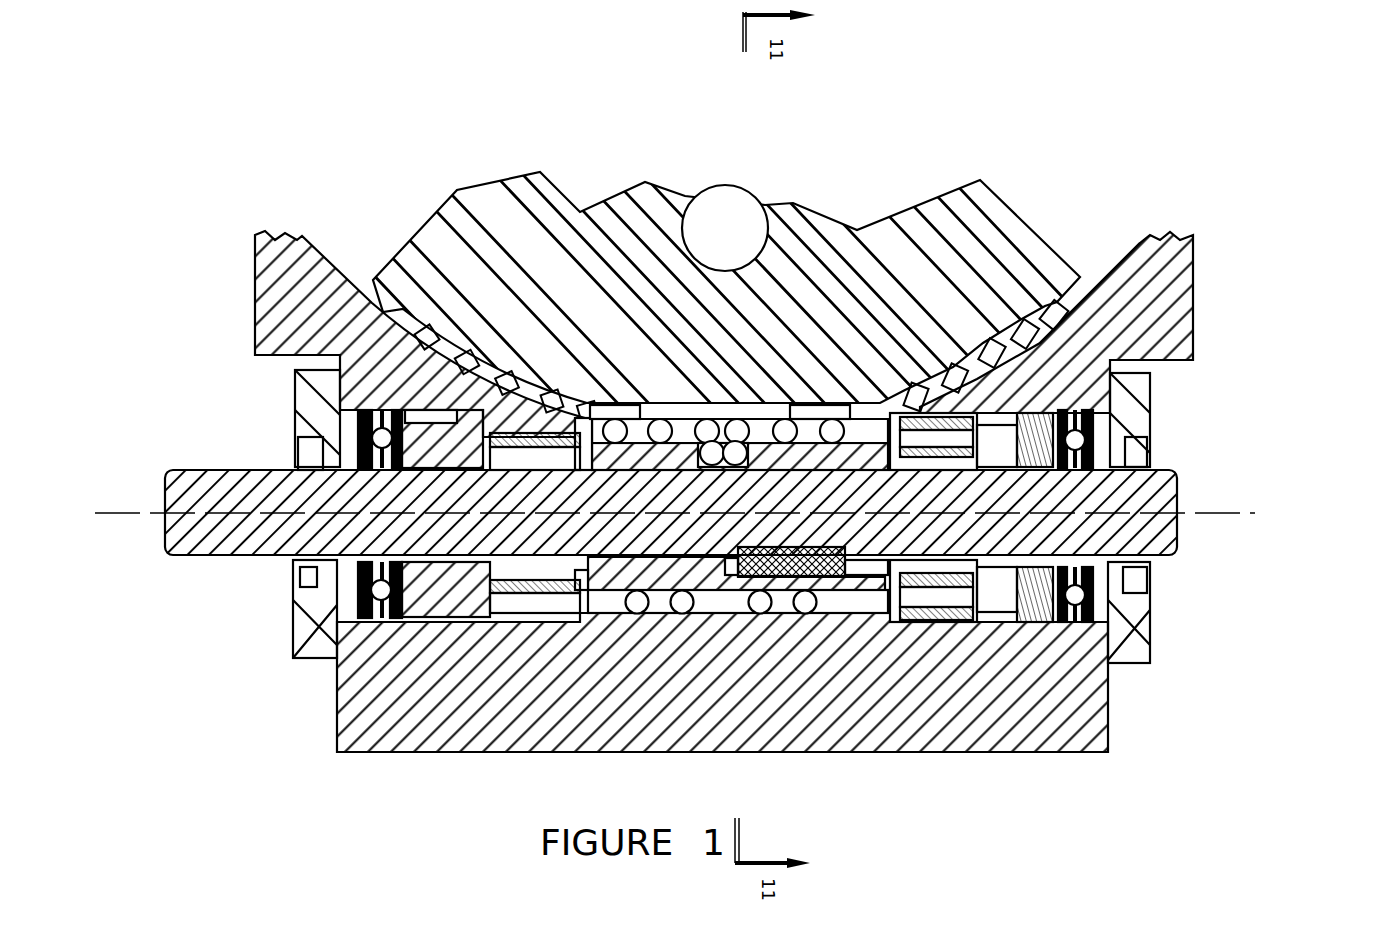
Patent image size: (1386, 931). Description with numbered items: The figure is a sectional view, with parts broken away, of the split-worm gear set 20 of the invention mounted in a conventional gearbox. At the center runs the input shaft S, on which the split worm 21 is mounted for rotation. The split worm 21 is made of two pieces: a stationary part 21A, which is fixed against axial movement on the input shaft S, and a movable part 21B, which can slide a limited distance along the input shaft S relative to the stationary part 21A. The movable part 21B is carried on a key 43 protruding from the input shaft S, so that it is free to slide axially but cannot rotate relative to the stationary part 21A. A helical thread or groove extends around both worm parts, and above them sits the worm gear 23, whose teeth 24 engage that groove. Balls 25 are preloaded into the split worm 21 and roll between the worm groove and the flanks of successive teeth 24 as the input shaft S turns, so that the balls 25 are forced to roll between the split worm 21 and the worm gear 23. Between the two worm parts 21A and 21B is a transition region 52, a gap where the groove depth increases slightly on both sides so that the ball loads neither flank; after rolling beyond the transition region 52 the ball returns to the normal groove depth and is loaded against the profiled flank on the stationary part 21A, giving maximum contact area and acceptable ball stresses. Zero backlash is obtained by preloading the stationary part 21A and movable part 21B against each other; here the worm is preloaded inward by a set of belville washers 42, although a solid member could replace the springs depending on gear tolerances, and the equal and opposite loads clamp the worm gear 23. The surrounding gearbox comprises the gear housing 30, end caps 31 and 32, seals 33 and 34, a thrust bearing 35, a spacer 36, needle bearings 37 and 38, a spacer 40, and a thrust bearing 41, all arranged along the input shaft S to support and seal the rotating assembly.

The split-worm gear set 20 is at (352, 243).
The split worm 21 is at (754, 388).
The stationary part 21A is at (643, 415).
The movable part 21B is at (800, 410).
The worm gear 23 is at (1033, 200).
The teeth 24 is at (1140, 243).
The balls 25 is at (714, 388).
The gear housing 30 is at (1195, 286).
The end cap 31 is at (1150, 408).
The end cap 32 is at (320, 660).
The seal 33 is at (1150, 590).
The seal 34 is at (293, 580).
The thrust bearing 35 is at (1107, 620).
The spacer 36 is at (992, 607).
The needle bearing 37 is at (913, 625).
The needle bearing 38 is at (530, 575).
The spacer 40 is at (440, 573).
The thrust bearing 41 is at (363, 600).
The belville washers 42 is at (1030, 620).
The key 43 is at (745, 613).
The transition region 52 is at (723, 446).
The input shaft S is at (1180, 490).